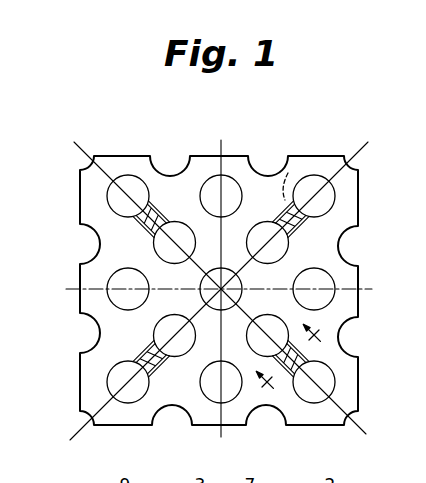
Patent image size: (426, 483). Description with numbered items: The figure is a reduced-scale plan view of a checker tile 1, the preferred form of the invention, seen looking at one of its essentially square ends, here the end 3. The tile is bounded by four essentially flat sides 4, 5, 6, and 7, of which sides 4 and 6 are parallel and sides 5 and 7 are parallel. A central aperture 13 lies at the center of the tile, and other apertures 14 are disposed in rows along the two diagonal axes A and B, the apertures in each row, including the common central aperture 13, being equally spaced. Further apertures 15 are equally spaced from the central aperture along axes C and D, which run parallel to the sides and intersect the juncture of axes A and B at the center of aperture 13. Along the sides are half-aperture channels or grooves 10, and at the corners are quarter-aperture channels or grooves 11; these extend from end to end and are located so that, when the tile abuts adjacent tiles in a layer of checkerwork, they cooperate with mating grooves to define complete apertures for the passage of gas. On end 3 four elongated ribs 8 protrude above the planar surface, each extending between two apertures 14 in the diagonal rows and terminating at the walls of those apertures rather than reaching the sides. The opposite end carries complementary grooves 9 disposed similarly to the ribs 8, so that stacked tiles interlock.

The checker tile 1 is at (80, 193).
The end 3 is at (273, 344).
The side 4 is at (80, 272).
The side 5 is at (128, 155).
The side 6 is at (360, 280).
The side 7 is at (228, 427).
The rib 8 is at (292, 179).
The groove 9 is at (153, 210).
The half aperture channel or groove 10 is at (181, 168).
The quarter-aperture channel or groove 11 is at (91, 161).
The central aperture 13 is at (238, 285).
The aperture 14 is at (119, 206).
The aperture 15 is at (201, 156).
The diagonal axis A is at (80, 413).
The diagonal axis B is at (356, 417).
The axis C is at (181, 284).
The axis D is at (212, 249).